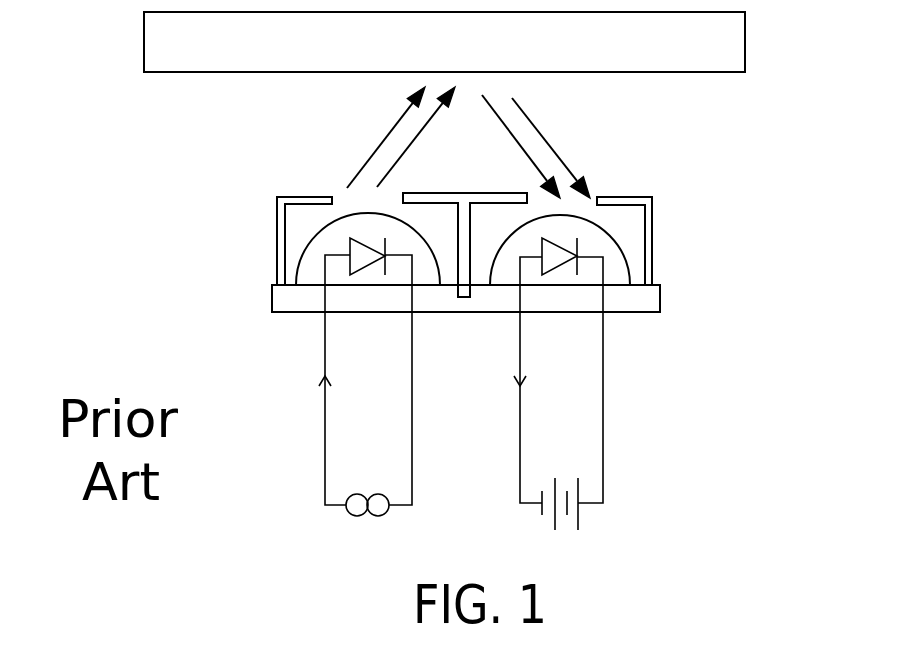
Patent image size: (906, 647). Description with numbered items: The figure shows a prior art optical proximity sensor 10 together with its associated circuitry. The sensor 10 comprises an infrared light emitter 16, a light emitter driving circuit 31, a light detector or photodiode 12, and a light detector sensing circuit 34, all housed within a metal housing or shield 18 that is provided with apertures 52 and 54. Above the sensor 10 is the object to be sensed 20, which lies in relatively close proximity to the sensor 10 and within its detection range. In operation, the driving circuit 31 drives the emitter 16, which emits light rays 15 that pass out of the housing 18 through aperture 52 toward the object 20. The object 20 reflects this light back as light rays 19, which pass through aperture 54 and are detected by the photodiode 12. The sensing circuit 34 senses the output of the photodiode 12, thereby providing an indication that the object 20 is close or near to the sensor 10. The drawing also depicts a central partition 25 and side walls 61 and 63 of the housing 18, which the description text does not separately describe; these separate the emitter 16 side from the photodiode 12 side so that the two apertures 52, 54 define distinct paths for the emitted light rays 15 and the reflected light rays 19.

The optical proximity sensor 10 is at (125, 191).
The light detector or photodiode 12 is at (592, 248).
The light rays 15 is at (418, 143).
The infrared light emitter 16 is at (340, 242).
The metal housing or shield 18 is at (260, 247).
The light rays 19 is at (519, 160).
The object to be sensed 20 is at (745, 38).
The central optical barrier wall 25 is at (470, 256).
The light emitter driving circuit 31 is at (325, 447).
The light detector sensing circuit 34 is at (603, 407).
The aperture 52 is at (340, 205).
The aperture 54 is at (598, 203).
The left side wall 61 is at (295, 193).
The right side wall 63 is at (645, 197).